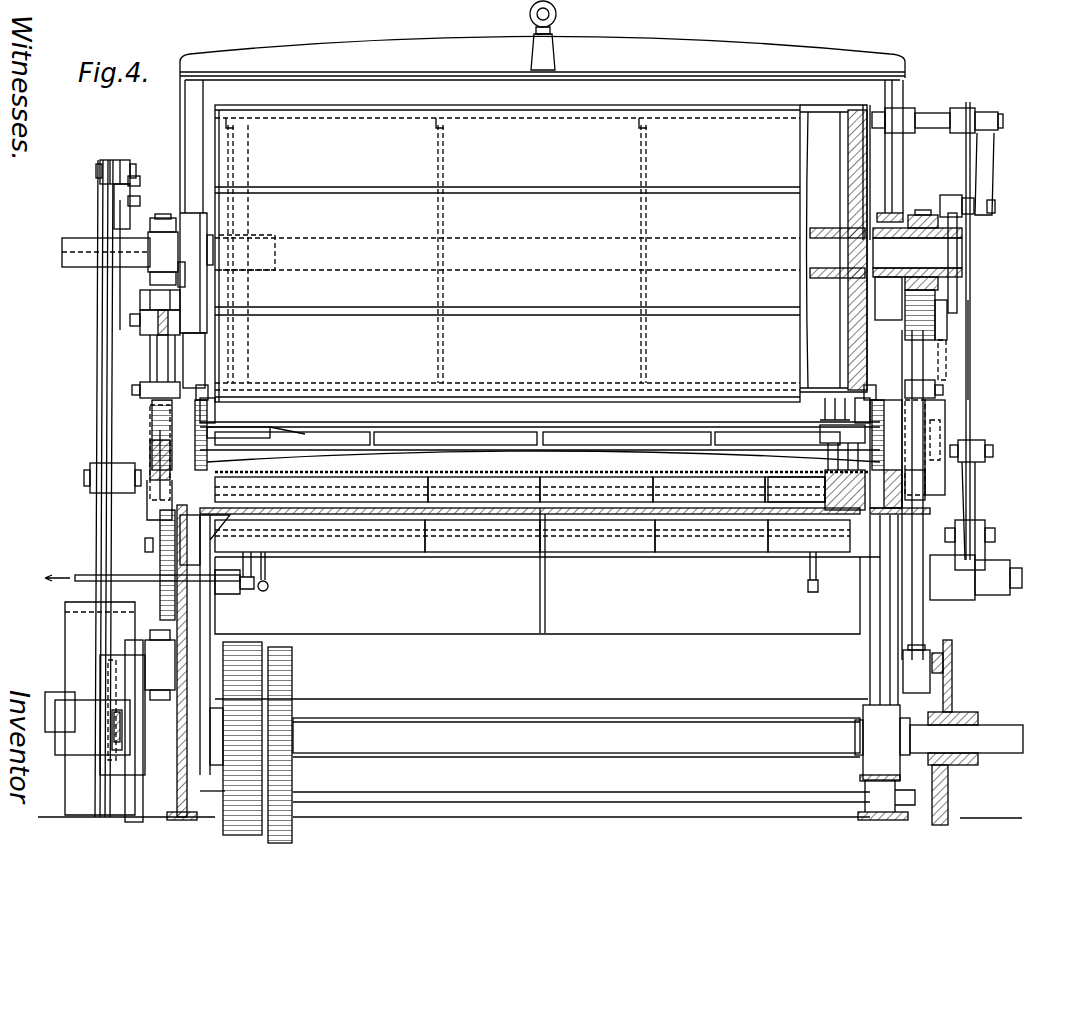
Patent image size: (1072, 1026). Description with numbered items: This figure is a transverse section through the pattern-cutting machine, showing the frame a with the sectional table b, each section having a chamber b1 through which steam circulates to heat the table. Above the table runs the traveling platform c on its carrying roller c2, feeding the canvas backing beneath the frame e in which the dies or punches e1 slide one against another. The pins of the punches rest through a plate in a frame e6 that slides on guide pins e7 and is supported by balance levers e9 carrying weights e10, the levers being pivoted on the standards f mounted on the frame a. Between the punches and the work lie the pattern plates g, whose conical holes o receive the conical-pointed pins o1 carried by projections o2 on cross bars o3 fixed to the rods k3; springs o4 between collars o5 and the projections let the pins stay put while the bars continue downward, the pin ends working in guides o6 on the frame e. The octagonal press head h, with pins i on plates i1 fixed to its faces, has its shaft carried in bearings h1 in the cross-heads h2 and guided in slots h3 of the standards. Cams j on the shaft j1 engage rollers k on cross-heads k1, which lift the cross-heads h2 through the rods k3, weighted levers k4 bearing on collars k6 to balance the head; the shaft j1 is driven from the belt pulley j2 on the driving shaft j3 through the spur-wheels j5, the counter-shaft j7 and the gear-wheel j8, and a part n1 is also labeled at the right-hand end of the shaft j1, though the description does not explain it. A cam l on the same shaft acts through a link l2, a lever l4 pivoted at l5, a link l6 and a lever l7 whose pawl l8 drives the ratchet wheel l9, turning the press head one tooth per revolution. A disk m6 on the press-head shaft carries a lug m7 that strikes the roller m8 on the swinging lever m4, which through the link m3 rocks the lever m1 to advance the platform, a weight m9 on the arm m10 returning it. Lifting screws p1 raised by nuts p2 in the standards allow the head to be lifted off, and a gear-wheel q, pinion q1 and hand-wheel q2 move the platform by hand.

The frame a is at (210, 600).
The table b is at (612, 512).
The chamber b1 is at (546, 564).
The traveling platform c is at (478, 512).
The roller c2 is at (537, 595).
The frame e is at (542, 487).
The dies or punches e1 is at (825, 486).
The frame e6 is at (535, 432).
The guide pins e7 is at (298, 430).
The balance levers e9 is at (170, 470).
The weights e10 is at (160, 437).
The standards f is at (925, 420).
The die or pattern plates g is at (920, 510).
The press head h is at (815, 125).
The bearings h1 is at (920, 222).
The cross-heads h2 is at (983, 276).
The slots h3 is at (888, 298).
The pins i is at (825, 412).
The plates i1 is at (507, 253).
The cams j is at (148, 775).
The shaft j1 is at (45, 742).
The belt pulley j2 is at (108, 632).
The driving shaft j3 is at (577, 705).
The spur-wheels j5 is at (294, 672).
The counter-shaft j7 is at (640, 790).
The gear-wheel j8 is at (225, 832).
The rollers k is at (945, 668).
The cross-heads k1 is at (973, 628).
The rods k3 is at (160, 350).
The levers k4 is at (148, 312).
The collars k6 is at (183, 278).
The cam l is at (100, 684).
The link l2 is at (112, 745).
The lever l4 is at (98, 362).
The pivot l5 is at (90, 478).
The link l6 is at (120, 160).
The lever l7 is at (132, 182).
The pawl l8 is at (134, 202).
The ratchet wheel l9 is at (156, 300).
The lever m1 is at (976, 478).
The link m3 is at (978, 452).
The swinging lever m4 is at (975, 342).
The disk m6 is at (958, 302).
The lug or projection m7 is at (975, 220).
The roller or tappet m8 is at (958, 196).
The weight m9 is at (980, 545).
The arm m10 is at (985, 567).
The bearing n1 is at (965, 714).
The conical holes o is at (886, 454).
The pins o1 is at (216, 405).
The projections o2 is at (203, 390).
The cross bars o3 is at (146, 388).
The springs o4 is at (208, 412).
The collars o5 is at (822, 440).
The guides o6 is at (826, 474).
The lifting screws p1 is at (152, 407).
The nuts p2 is at (938, 328).
The gear-wheel q is at (190, 592).
The pinion q1 is at (188, 542).
The hand-wheel q2 is at (158, 548).